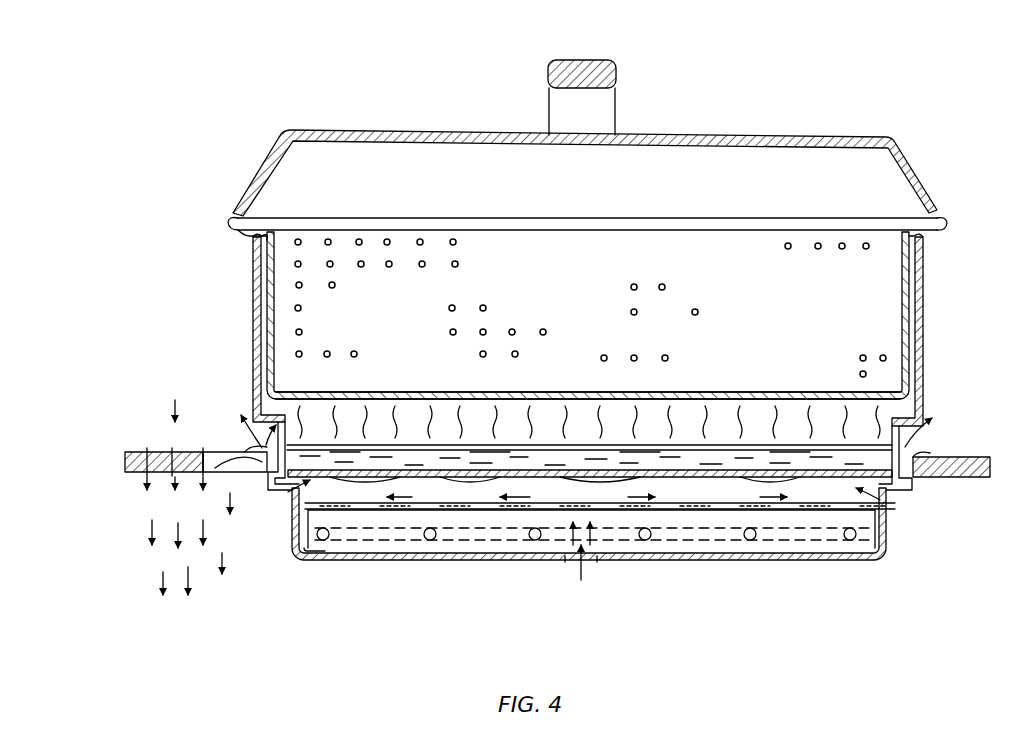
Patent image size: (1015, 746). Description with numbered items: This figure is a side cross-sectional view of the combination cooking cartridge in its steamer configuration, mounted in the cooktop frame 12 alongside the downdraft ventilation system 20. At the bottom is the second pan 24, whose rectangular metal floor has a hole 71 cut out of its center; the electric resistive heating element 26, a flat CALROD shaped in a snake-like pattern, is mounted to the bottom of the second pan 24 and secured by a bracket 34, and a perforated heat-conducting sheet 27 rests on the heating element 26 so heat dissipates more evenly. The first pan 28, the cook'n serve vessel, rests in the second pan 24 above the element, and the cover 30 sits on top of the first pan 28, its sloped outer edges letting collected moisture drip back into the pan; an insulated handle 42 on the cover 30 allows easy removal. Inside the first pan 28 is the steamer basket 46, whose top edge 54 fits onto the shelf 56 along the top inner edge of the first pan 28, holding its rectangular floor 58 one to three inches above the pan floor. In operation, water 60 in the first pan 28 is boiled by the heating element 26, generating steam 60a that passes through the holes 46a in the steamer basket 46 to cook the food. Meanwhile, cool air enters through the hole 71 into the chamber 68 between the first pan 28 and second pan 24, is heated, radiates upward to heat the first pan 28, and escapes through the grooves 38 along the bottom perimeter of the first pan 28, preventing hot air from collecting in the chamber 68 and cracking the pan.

The cooktop frame 12 is at (960, 462).
The downdraft ventilation system 20 is at (168, 510).
The second pan 24 is at (887, 545).
The heating element 26 is at (433, 540).
The sheet 27 is at (463, 510).
The first pan 28 is at (925, 358).
The cover 30 is at (862, 138).
The bracket 34 is at (317, 553).
The groove 38 is at (262, 440).
The insulated handle 42 is at (602, 59).
The steamer basket 46 is at (620, 278).
The holes 46a is at (486, 308).
The top edge 54 is at (238, 234).
The shelf 56 is at (248, 245).
The floor 58 is at (714, 393).
The water 60 is at (755, 455).
The steam 60a is at (556, 398).
The chamber 68 is at (790, 495).
The hole 71 is at (590, 560).